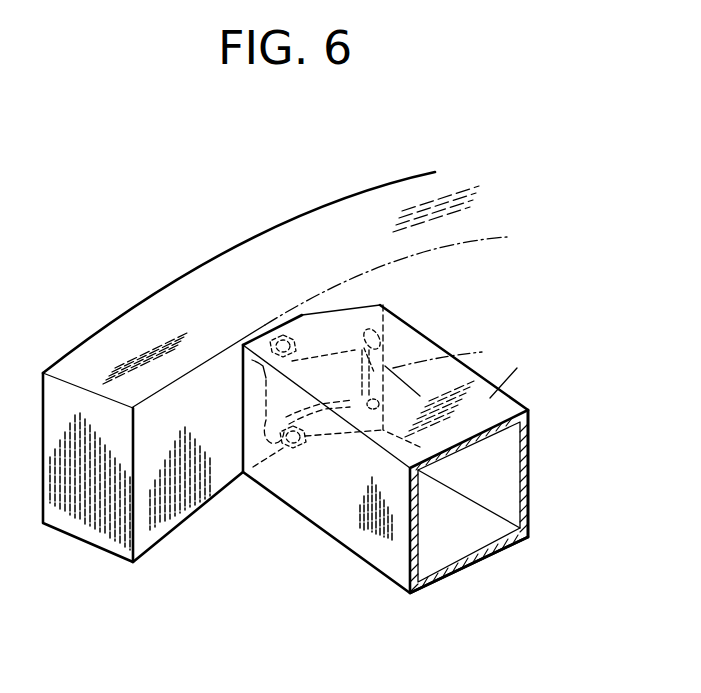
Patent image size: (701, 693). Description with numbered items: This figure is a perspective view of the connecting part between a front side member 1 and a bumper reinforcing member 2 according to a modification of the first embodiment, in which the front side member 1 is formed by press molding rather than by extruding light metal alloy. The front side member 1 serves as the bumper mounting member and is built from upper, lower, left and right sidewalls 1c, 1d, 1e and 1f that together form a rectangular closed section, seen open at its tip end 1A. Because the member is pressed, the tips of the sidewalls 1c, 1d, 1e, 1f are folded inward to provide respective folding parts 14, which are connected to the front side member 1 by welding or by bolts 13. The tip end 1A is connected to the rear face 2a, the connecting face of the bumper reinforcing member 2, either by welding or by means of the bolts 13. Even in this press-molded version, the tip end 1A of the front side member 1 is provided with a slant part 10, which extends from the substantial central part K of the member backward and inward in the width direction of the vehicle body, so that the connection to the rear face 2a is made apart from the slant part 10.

The front side member 1 is at (401, 423).
The tip end 1A is at (296, 326).
The upper sidewall 1c is at (497, 392).
The lower sidewall 1d is at (480, 562).
The left sidewall 1e is at (367, 548).
The right sidewall 1f is at (533, 476).
The bumper reinforcing member 2 is at (275, 369).
The rear face 2a is at (168, 520).
The slant part 10 is at (340, 320).
The bolts 13 is at (257, 332).
The folding parts 14 is at (338, 325).
The central part K is at (482, 352).